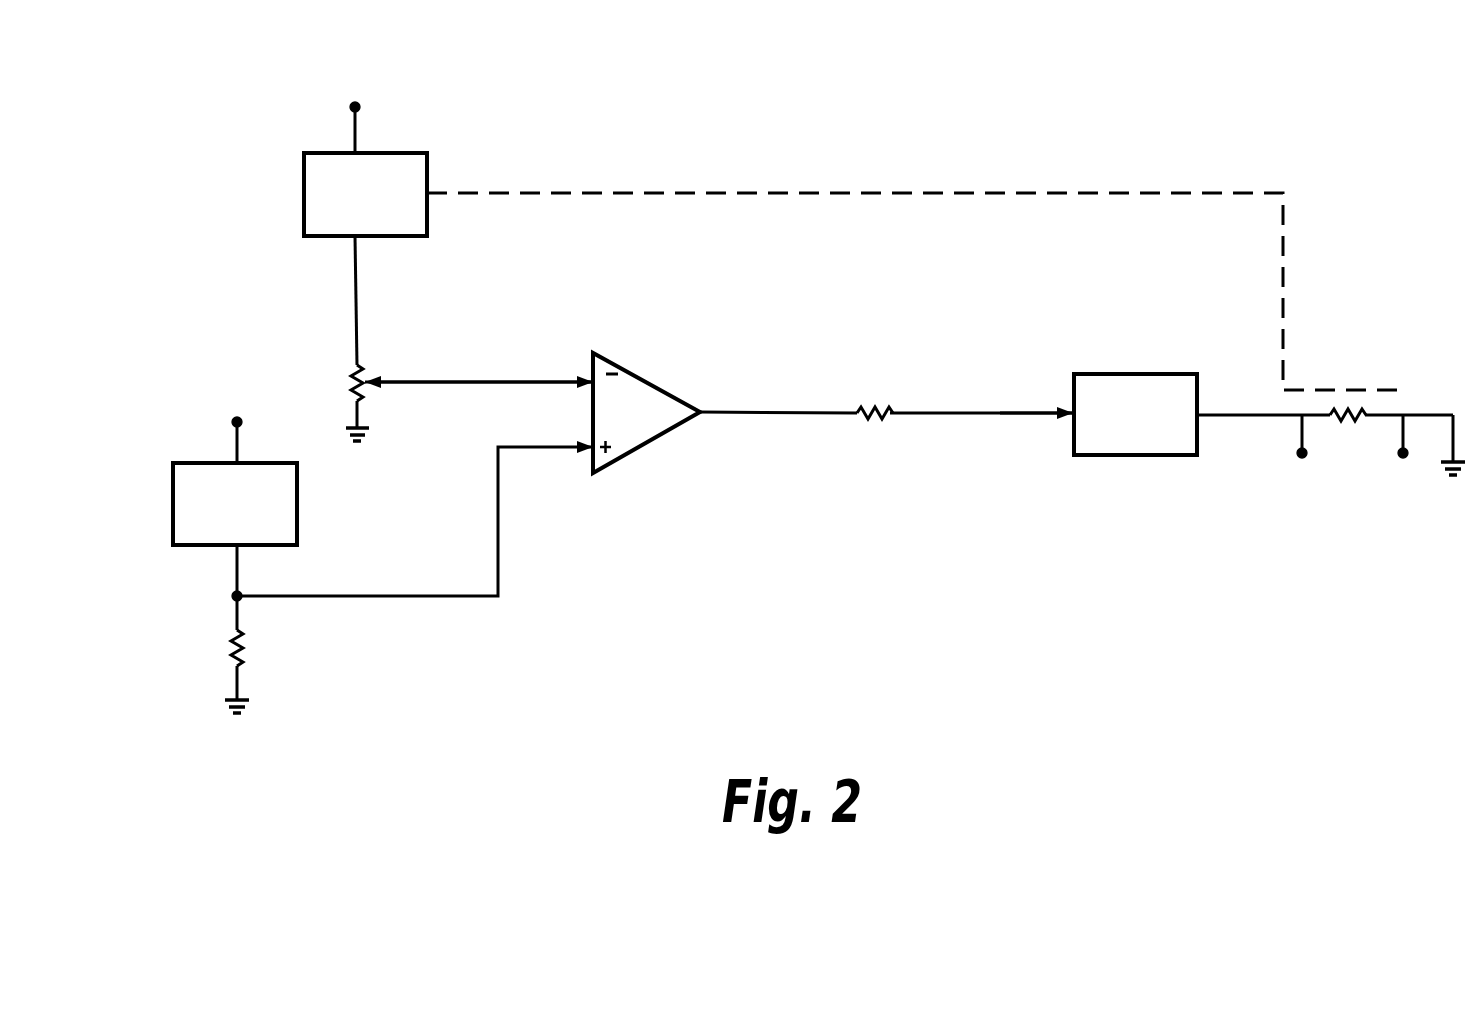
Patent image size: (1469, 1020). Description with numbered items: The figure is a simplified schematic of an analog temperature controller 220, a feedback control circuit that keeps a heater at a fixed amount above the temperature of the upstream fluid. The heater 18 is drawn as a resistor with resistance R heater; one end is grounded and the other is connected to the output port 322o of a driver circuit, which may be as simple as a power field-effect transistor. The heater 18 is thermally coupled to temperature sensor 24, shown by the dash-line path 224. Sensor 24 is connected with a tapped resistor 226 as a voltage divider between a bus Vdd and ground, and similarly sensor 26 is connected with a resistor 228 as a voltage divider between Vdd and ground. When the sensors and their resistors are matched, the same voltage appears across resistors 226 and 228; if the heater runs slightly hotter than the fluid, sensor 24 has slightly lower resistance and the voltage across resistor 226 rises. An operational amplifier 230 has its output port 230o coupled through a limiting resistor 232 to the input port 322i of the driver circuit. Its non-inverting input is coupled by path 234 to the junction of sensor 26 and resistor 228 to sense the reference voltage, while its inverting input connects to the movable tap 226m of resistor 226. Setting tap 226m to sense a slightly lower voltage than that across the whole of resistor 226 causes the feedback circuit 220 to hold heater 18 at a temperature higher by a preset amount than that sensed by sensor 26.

The temperature controller 220 is at (783, 557).
The temperature sensor 24 is at (305, 194).
The temperature sensor 26 is at (173, 506).
The dash-line path 224 is at (1025, 196).
The tapped resistor 226 is at (354, 390).
The movable tap 226m is at (447, 383).
The resistor 228 is at (231, 648).
The operational amplifier 230 is at (652, 440).
The output port 230o is at (700, 412).
The limiting resistor 232 is at (872, 420).
The path 234 is at (512, 530).
The input port 322i is at (1071, 405).
The output port 322o is at (1200, 418).
The heater 18 is at (1352, 421).